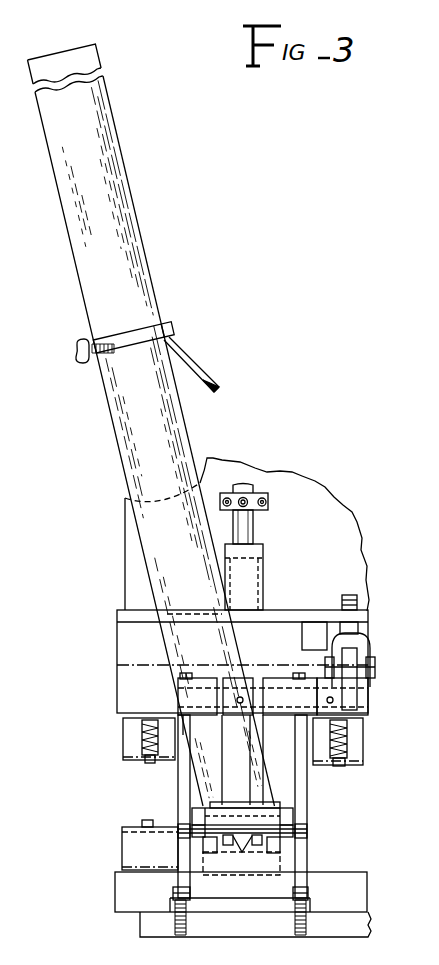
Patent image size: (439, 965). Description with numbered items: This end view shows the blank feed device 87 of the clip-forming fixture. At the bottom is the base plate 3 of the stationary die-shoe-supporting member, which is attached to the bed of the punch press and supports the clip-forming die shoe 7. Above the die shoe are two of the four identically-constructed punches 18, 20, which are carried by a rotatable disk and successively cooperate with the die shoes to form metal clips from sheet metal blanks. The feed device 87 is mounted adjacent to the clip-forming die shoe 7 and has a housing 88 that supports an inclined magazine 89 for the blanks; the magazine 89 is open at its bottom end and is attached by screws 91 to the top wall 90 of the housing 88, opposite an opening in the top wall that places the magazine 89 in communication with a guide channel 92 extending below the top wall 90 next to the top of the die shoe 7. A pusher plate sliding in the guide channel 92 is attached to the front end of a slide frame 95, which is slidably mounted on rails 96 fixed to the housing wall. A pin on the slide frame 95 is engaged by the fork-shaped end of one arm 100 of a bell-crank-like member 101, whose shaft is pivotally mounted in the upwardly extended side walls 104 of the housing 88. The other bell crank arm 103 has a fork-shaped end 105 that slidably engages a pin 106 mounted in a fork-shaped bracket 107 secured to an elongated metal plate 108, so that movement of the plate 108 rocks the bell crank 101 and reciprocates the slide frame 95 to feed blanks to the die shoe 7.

The base plate 3 is at (122, 892).
The clip-forming die shoe 7 is at (127, 846).
The punch 18 is at (123, 742).
The punch 20 is at (365, 744).
The feed device 87 is at (250, 828).
The housing 88 is at (178, 787).
The magazine 89 is at (122, 433).
The top wall 90 is at (282, 823).
The screws 91 is at (192, 815).
The guide channel 92 is at (226, 875).
The slide frame 95 is at (234, 846).
The rails 96 is at (207, 849).
The arm 100 is at (255, 733).
The bell-crank-like member 101 is at (270, 679).
The bell crank arm 103 is at (356, 688).
The side walls 104 is at (182, 727).
The fork-shaped end 105 is at (348, 657).
The pin 106 is at (374, 667).
The fork-shaped bracket 107 is at (357, 643).
The elongated metal plate 108 is at (313, 604).